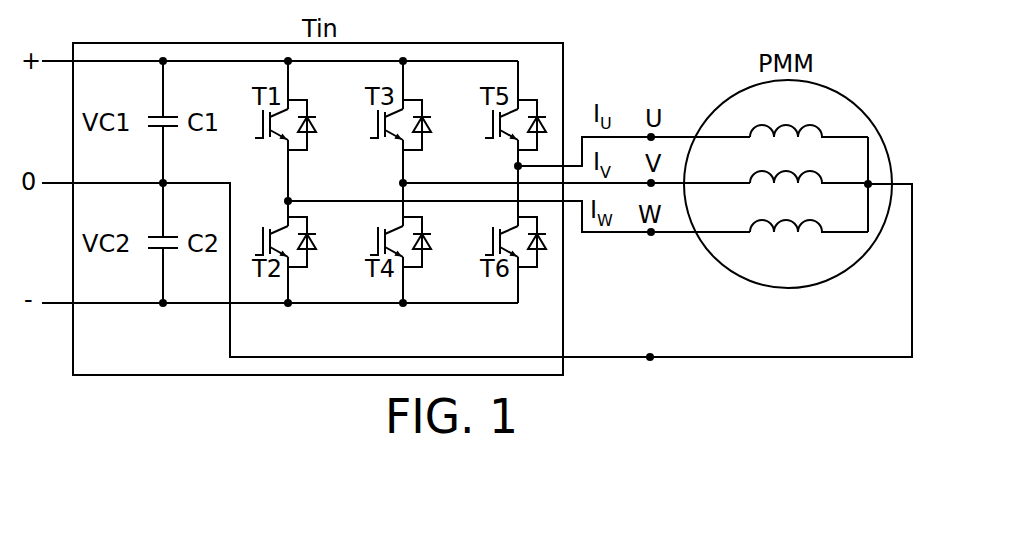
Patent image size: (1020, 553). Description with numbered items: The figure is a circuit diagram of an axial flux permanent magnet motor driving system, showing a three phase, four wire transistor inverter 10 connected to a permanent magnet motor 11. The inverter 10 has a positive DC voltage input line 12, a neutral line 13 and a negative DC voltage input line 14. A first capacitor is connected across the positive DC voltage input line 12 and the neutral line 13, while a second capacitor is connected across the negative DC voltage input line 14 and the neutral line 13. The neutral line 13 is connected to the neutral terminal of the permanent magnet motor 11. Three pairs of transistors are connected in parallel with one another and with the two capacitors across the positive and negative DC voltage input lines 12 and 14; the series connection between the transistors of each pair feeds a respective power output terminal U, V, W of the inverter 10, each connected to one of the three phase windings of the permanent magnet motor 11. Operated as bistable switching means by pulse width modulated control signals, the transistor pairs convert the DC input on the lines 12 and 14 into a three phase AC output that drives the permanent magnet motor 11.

The transistor inverter 10 is at (97, 375).
The permanent magnet motor 11 is at (855, 105).
The positive DC voltage input line 12 is at (53, 60).
The neutral line 13 is at (605, 359).
The negative DC voltage input line 14 is at (53, 305).